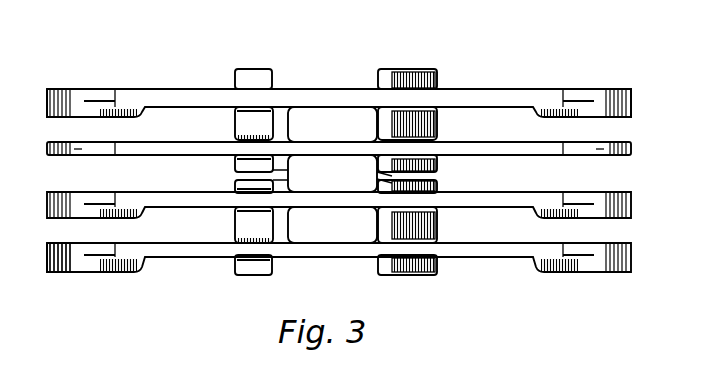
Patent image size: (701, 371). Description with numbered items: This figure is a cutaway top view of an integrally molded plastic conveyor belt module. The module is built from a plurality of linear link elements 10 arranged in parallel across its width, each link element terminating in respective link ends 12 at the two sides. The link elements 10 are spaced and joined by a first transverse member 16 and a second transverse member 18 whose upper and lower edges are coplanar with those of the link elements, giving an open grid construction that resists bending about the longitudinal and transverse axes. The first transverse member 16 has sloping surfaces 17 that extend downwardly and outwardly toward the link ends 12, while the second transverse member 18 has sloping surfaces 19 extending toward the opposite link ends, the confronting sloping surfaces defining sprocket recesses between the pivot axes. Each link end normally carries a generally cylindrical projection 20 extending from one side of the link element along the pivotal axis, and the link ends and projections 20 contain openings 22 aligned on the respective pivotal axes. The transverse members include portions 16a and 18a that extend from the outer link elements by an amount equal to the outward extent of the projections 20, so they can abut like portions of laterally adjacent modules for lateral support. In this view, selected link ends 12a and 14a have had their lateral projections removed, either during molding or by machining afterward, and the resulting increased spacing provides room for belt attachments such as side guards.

The link element 10 is at (62, 88).
The link end 12 is at (47, 262).
The link end with projection removed 12a is at (50, 143).
The link end with projection removed 14a is at (632, 145).
The first transverse member 16 is at (280, 118).
The extending portion of first transverse member 16a is at (267, 277).
The sloping surface 17 is at (256, 125).
The second transverse member 18 is at (388, 114).
The extending portion of second transverse member 18a is at (405, 275).
The sloping surface 19 is at (426, 228).
The cylindrical projection 20 is at (621, 90).
The opening 22 is at (85, 88).